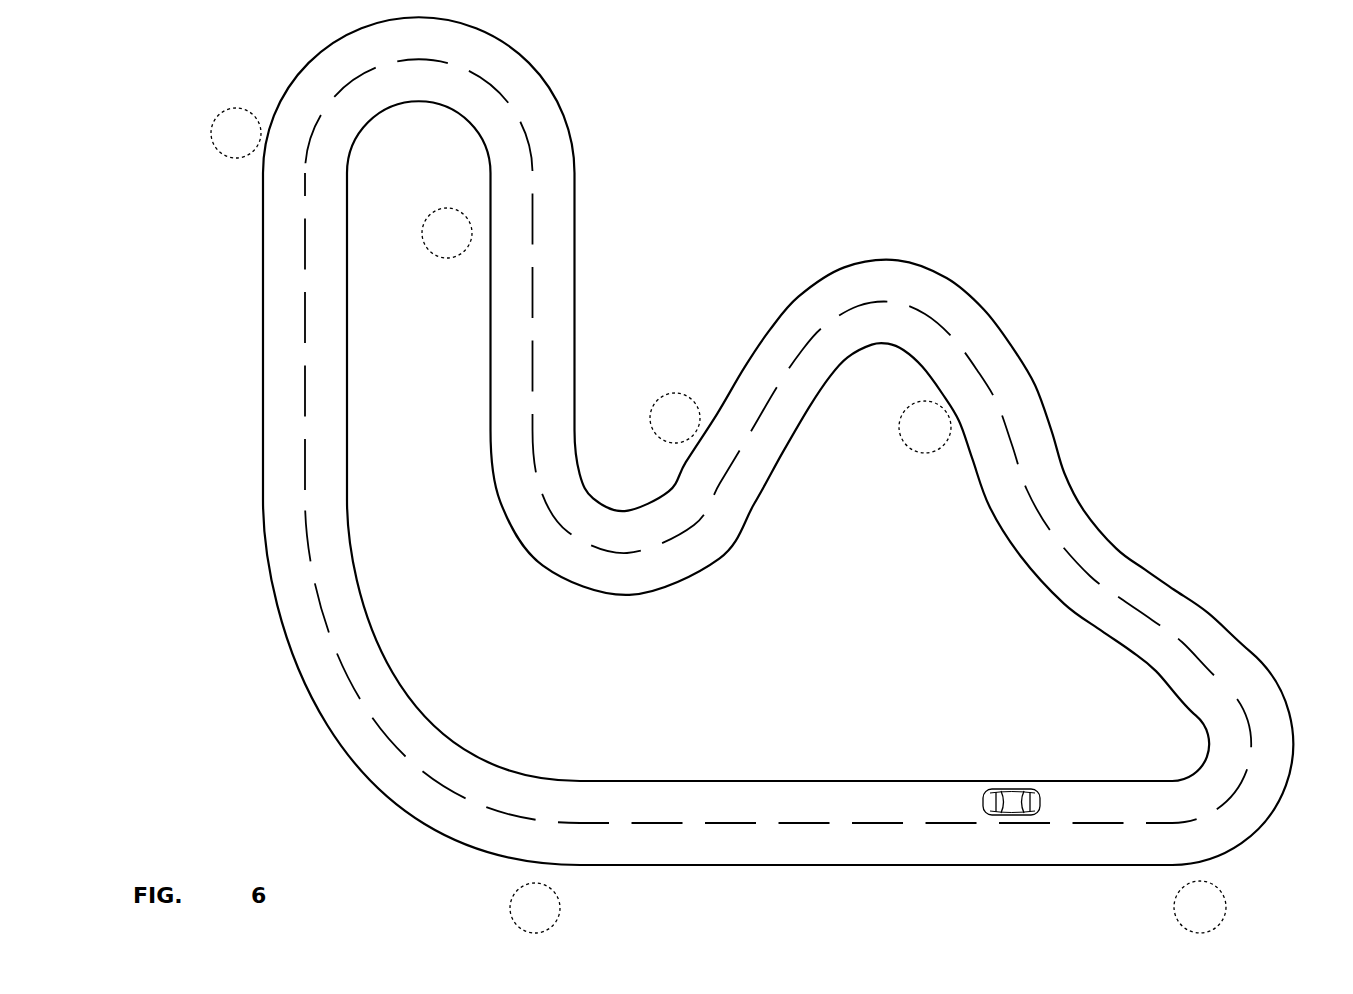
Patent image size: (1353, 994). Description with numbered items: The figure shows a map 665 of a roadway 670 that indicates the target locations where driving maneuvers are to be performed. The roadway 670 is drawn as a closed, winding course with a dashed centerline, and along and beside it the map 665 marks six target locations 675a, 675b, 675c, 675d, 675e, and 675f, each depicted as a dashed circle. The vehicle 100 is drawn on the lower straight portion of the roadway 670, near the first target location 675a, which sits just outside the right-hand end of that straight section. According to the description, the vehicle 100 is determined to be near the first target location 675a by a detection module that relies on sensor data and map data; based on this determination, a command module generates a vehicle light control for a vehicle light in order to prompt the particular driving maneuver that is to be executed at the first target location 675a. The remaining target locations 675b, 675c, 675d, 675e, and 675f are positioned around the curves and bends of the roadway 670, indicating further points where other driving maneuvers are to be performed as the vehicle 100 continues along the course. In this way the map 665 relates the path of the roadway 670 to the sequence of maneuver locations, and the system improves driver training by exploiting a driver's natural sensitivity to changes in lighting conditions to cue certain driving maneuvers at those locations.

The roadway 670 is at (546, 88).
The map 665 is at (1207, 244).
The vehicle 100 is at (1003, 794).
The first target location 675a is at (1227, 912).
The target location 675b is at (928, 453).
The target location 675c is at (677, 393).
The target location 675d is at (448, 260).
The target location 675e is at (222, 112).
The target location 675f is at (560, 913).